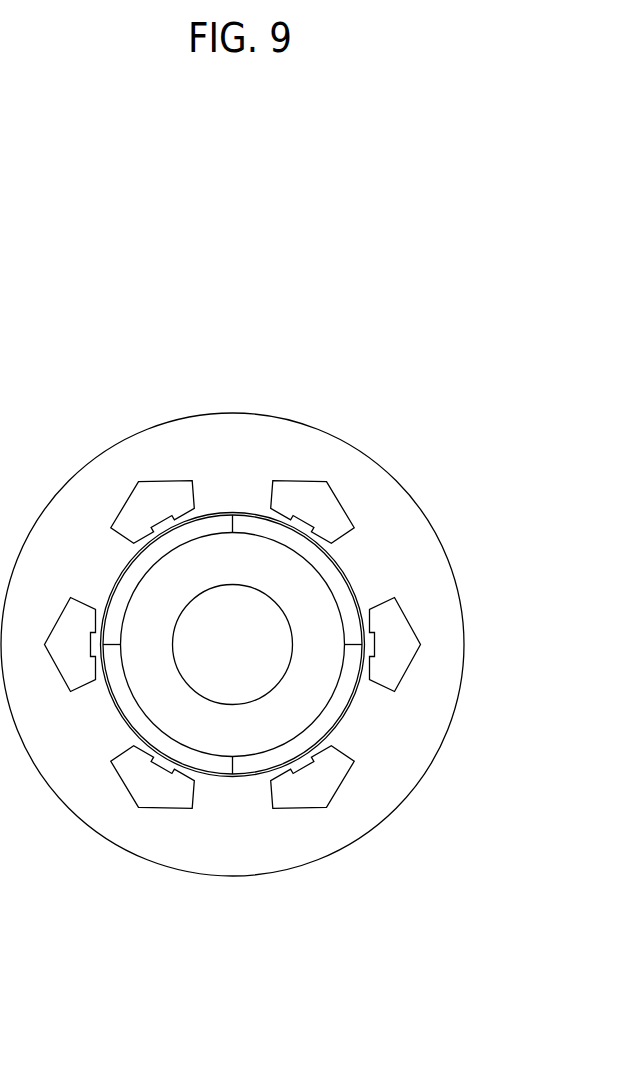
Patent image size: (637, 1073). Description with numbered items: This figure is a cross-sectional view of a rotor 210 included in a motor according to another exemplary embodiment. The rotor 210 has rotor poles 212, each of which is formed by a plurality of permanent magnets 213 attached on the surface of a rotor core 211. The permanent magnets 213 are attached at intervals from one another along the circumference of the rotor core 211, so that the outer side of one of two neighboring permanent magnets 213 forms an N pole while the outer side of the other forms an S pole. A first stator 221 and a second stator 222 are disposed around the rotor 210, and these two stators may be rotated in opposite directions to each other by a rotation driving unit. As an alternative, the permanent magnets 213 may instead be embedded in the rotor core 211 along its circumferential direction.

The rotor 210 is at (329, 595).
The rotor core 211 is at (322, 607).
The rotor poles 212 is at (352, 558).
The permanent magnets 213 is at (295, 543).
The first stator 221 is at (232, 617).
The second stator 222 is at (233, 644).